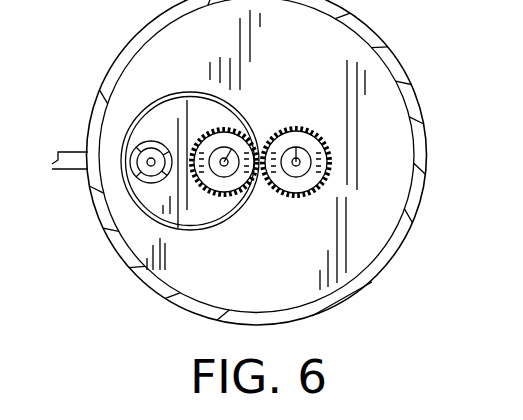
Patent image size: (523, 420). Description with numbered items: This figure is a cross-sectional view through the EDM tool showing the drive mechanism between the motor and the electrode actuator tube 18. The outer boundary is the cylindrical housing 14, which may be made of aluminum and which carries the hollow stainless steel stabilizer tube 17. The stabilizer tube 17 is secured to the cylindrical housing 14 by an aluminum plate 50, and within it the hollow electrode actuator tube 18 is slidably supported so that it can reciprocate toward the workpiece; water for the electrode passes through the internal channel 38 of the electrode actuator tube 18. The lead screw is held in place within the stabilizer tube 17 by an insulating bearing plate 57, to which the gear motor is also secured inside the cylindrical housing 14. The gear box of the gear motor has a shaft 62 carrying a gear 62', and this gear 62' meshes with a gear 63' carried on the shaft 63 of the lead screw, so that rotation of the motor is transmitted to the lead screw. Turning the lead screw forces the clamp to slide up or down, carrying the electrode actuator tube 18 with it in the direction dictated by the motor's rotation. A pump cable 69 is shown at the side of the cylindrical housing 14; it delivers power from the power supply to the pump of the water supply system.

The cylindrical housing 14 is at (382, 43).
The stabilizer tube 17 is at (143, 112).
The electrode actuator tube 18 is at (92, 193).
The internal channel 38 is at (151, 162).
The aluminum plate 50 is at (385, 228).
The insulating bearing plate 57 is at (191, 230).
The shaft 62 is at (299, 143).
The gear 62' is at (379, 157).
The shaft 63 is at (243, 136).
The gear 63' is at (179, 91).
The pump cable 69 is at (55, 164).